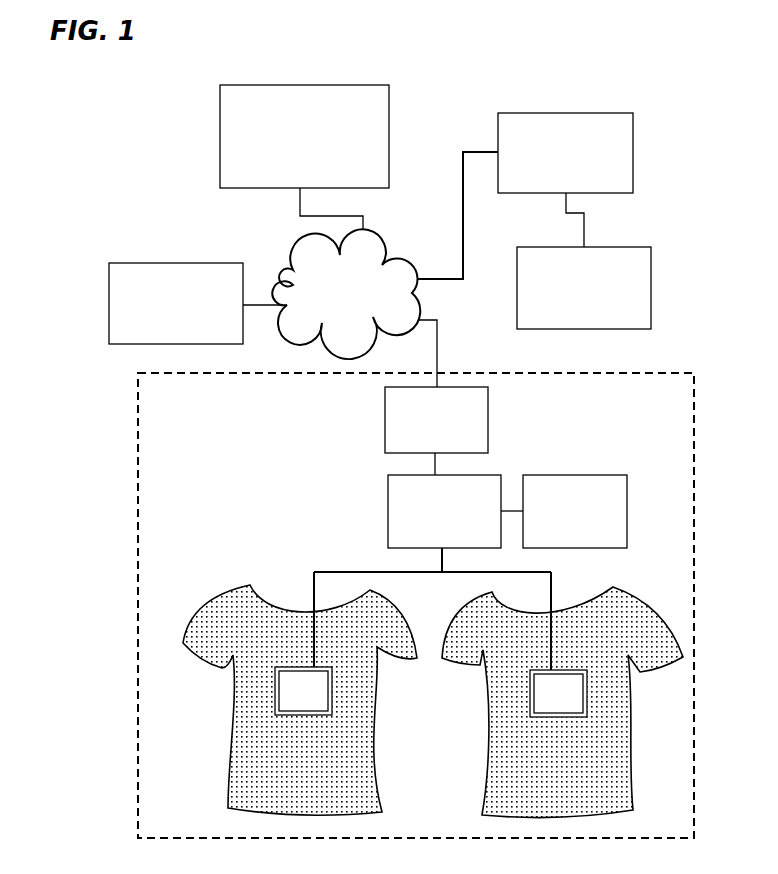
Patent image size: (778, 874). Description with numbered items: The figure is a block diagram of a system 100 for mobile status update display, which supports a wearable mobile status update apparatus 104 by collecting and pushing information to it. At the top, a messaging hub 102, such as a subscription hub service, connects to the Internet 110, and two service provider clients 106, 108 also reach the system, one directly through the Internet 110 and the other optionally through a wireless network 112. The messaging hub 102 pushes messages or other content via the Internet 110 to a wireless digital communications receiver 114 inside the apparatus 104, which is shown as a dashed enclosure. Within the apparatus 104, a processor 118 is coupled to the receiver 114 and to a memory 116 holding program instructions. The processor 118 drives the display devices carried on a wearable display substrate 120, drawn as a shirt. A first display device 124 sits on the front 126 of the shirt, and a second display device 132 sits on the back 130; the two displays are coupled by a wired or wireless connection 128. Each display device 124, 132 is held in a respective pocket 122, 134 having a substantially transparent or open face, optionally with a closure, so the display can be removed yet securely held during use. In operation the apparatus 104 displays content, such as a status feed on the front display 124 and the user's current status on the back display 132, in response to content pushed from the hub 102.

The system 100 is at (164, 96).
The messaging hub 102 is at (289, 169).
The mobile status update apparatus 104 is at (128, 447).
The client 106 is at (160, 331).
The client 108 is at (568, 319).
The Internet 110 is at (336, 299).
The wireless network 112 is at (549, 189).
The wireless digital communications receiver 114 is at (420, 447).
The memory 116 is at (559, 537).
The processor 118 is at (428, 540).
The wearable display substrate 120 is at (425, 674).
The pocket 122 is at (277, 678).
The first display device 124 is at (287, 698).
The front 126 is at (252, 753).
The wired or wireless connection 128 is at (334, 703).
The back 130 is at (517, 760).
The second display device 132 is at (567, 707).
The pocket 134 is at (562, 718).